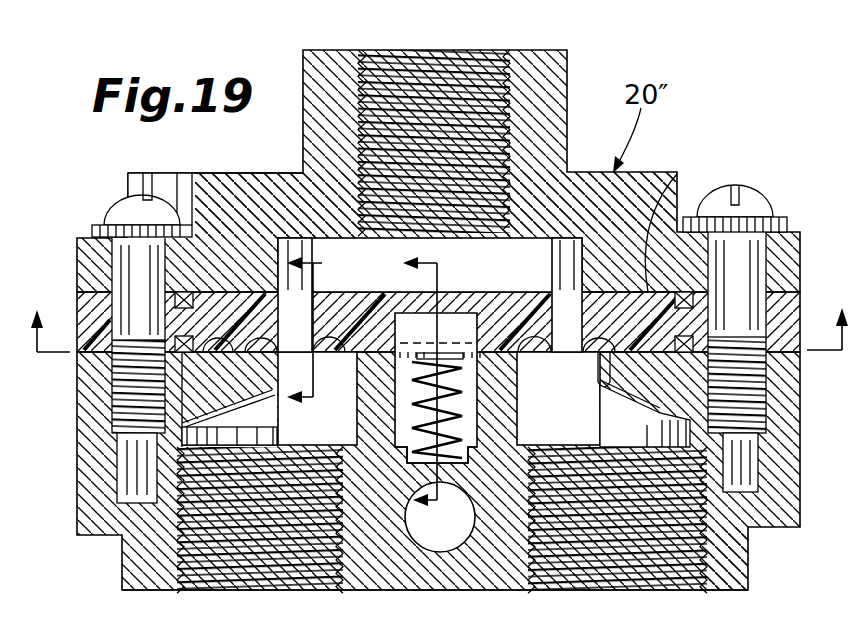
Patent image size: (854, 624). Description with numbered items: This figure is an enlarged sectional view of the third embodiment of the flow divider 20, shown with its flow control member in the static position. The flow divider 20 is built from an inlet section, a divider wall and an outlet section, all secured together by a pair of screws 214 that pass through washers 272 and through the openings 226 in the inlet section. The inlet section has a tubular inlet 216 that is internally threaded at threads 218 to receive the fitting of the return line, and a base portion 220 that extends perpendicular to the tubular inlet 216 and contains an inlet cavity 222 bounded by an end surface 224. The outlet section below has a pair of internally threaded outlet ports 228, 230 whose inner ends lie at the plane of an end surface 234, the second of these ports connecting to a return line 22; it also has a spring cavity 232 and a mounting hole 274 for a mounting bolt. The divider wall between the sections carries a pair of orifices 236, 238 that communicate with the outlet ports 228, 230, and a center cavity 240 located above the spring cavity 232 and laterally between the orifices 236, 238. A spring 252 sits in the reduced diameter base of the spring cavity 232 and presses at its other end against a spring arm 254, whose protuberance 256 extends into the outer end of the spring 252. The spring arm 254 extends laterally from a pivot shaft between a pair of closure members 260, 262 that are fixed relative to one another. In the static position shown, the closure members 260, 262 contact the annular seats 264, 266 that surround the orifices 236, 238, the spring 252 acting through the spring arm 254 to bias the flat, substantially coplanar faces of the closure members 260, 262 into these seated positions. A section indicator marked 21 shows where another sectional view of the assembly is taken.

The screws 214 is at (117, 210).
The tubular inlet 216 is at (568, 90).
The internal threads 218 is at (390, 82).
The base portion 220 is at (243, 186).
The inlet cavity 222 is at (617, 200).
The end surface 224 is at (673, 194).
The openings 226 is at (122, 275).
The outlet port 228 is at (210, 575).
The outlet port 230 is at (640, 578).
The spring cavity 232 is at (466, 404).
The end surface 234 is at (190, 361).
The orifice 236 is at (328, 298).
The orifice 238 is at (566, 290).
The center cavity 240 is at (393, 368).
The spring 252 is at (470, 418).
The spring arm 254 is at (548, 292).
The protuberance 256 is at (398, 350).
The closure member 260 is at (286, 351).
The closure member 262 is at (645, 413).
The annular seat 264 is at (230, 399).
The annular seat 266 is at (588, 356).
The washers 272 is at (92, 230).
The mounting hole 274 is at (458, 534).
The flow divider 20 is at (434, 312).
The section line 21- 21 is at (324, 329).
The return line 22 is at (446, 397).